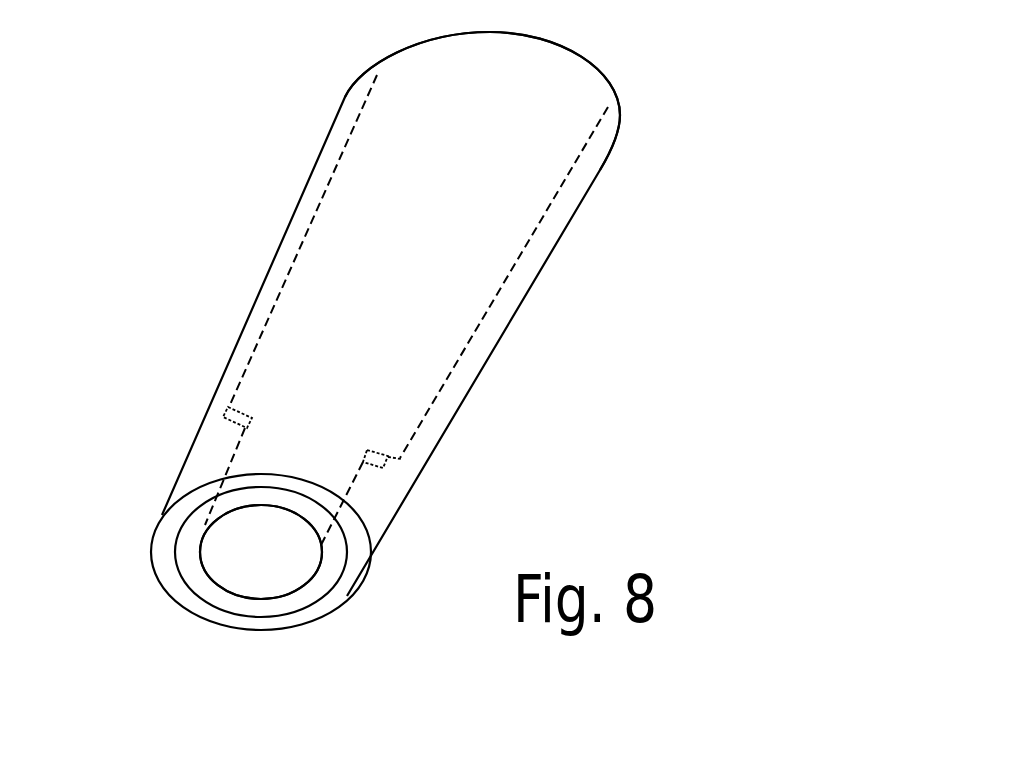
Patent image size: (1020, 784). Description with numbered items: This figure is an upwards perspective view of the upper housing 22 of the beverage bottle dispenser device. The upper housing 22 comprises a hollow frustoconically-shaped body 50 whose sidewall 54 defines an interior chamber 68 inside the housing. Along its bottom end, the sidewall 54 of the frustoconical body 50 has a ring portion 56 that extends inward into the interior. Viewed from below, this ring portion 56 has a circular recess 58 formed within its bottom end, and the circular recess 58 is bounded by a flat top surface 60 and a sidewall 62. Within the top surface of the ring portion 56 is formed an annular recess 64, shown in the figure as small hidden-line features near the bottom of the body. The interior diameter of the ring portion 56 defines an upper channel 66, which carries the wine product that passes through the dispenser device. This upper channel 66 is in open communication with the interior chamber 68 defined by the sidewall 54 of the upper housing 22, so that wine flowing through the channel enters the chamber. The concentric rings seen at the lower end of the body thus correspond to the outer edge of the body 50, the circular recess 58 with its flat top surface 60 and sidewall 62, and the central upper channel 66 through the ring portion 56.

The upper housing 22 is at (683, 97).
The frustoconical body 50 is at (498, 327).
The sidewall 54 is at (283, 260).
The ring portion 56 is at (375, 485).
The circular recess 58 is at (193, 565).
The flat top surface 60 is at (167, 538).
The sidewall of circular recess 62 is at (329, 562).
The annular recess 64 is at (244, 410).
The upper channel 66 is at (276, 562).
The interior chamber 68 is at (446, 203).